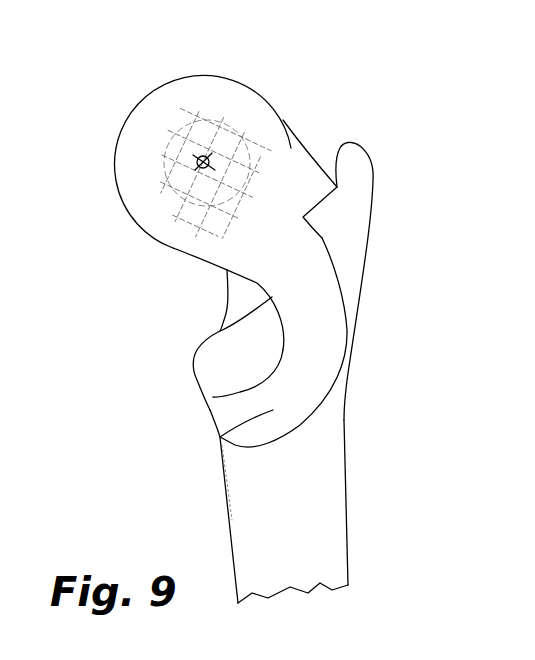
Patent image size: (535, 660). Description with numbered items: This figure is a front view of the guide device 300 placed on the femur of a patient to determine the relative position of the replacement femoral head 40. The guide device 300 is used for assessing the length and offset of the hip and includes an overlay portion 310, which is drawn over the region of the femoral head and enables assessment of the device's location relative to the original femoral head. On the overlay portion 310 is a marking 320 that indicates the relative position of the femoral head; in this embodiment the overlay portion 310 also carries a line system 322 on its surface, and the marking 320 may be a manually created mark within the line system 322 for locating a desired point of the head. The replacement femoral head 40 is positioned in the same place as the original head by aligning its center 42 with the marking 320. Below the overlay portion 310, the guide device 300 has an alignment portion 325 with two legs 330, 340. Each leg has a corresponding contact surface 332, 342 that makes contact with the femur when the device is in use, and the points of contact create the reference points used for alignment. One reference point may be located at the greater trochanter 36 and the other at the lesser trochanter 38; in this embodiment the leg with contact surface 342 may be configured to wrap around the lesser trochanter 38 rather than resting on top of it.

The guide device 300 is at (110, 87).
The overlay portion 310 is at (213, 93).
The replacement femoral head 40 is at (178, 122).
The center of the replacement femoral head 42 is at (196, 159).
The marking 320 is at (192, 163).
The line system 322 is at (178, 196).
The alignment portion 325 is at (278, 228).
The leg 330 is at (300, 187).
The greater trochanter 36 is at (348, 163).
The contact surface 332 is at (337, 188).
The lesser trochanter 38 is at (207, 363).
The contact surface 342 is at (215, 402).
The leg 340 is at (220, 437).